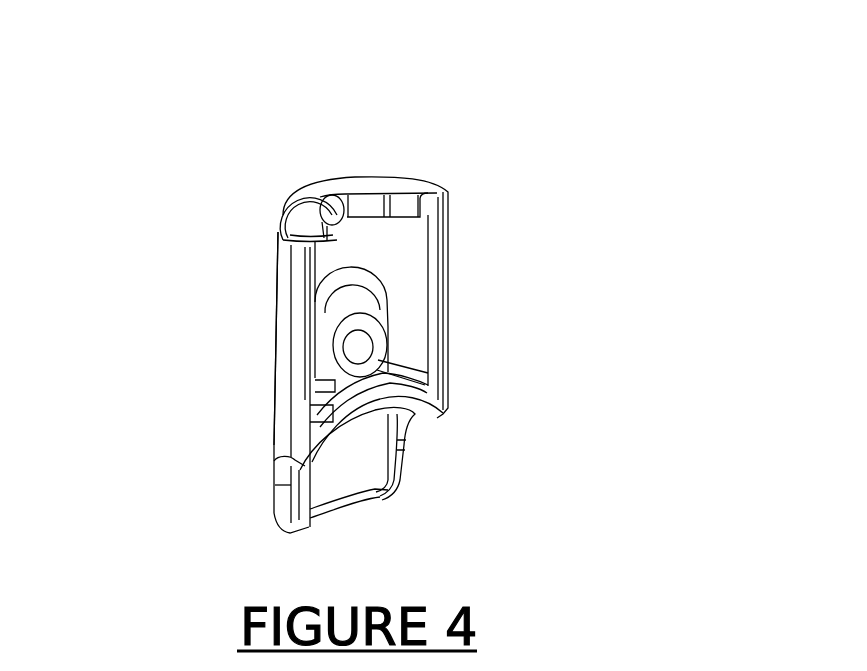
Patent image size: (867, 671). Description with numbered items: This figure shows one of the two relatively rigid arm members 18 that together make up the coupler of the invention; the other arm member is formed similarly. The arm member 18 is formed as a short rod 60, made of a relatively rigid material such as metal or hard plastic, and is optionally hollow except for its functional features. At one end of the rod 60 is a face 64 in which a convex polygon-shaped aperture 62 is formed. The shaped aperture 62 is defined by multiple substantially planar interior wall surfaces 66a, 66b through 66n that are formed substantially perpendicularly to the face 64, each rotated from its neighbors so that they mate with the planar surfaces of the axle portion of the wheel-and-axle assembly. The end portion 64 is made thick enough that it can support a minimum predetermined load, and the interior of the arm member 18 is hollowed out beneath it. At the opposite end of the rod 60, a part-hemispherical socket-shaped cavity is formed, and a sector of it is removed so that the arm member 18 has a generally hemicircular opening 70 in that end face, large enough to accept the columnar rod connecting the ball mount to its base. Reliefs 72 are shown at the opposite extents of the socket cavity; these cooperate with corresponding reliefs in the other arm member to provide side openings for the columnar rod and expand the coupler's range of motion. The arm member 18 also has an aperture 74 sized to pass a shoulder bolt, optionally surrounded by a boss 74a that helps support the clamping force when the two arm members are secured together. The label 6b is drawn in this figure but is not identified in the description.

The arm member 18 is at (232, 222).
The shaped aperture 62 is at (337, 172).
The face 64 is at (315, 199).
The interior wall surface 66a is at (405, 206).
The interior wall surface 66b is at (372, 206).
The interior wall surface 66n is at (352, 247).
The boss 74a is at (395, 330).
The aperture 74 is at (350, 355).
The relief 72 is at (435, 450).
The cutout 6b is at (357, 472).
The rod 60 is at (263, 432).
The hemicircular opening 70 is at (350, 525).